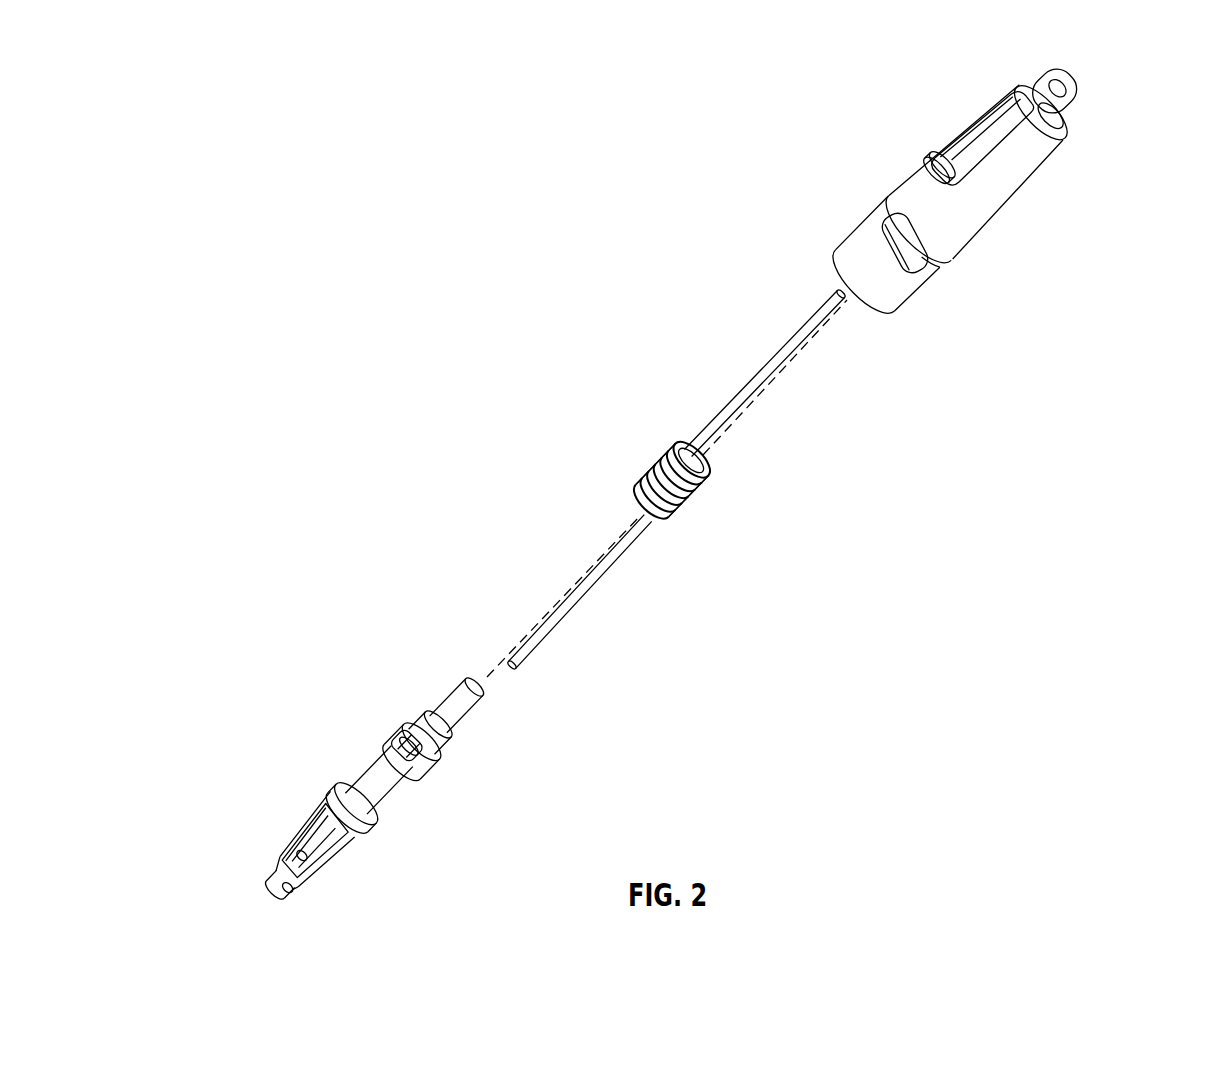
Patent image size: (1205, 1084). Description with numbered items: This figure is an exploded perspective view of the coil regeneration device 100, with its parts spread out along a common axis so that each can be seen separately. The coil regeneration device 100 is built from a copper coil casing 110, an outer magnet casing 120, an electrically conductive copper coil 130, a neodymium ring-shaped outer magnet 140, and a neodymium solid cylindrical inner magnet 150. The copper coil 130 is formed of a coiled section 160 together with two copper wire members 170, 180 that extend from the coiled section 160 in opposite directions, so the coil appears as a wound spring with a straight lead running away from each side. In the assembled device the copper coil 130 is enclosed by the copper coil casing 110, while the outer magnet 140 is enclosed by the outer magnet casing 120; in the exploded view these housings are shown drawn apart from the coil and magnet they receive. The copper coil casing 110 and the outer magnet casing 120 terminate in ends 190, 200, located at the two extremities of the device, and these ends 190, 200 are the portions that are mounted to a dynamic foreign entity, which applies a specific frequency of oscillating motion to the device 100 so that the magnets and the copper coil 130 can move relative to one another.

The coil regeneration device 100 is at (335, 174).
The copper coil casing 110 is at (281, 858).
The outer magnet casing 120 is at (988, 202).
The electrically conductive copper coil 130 is at (680, 452).
The neodymium ring-shaped outer magnet 140 is at (908, 290).
The neodymium solid cylindrical inner magnet 150 is at (463, 682).
The coiled section 160 is at (700, 513).
The copper wire member 170 is at (778, 357).
The copper wire member 180 is at (551, 625).
The end 190 is at (1090, 102).
The end 200 is at (300, 900).